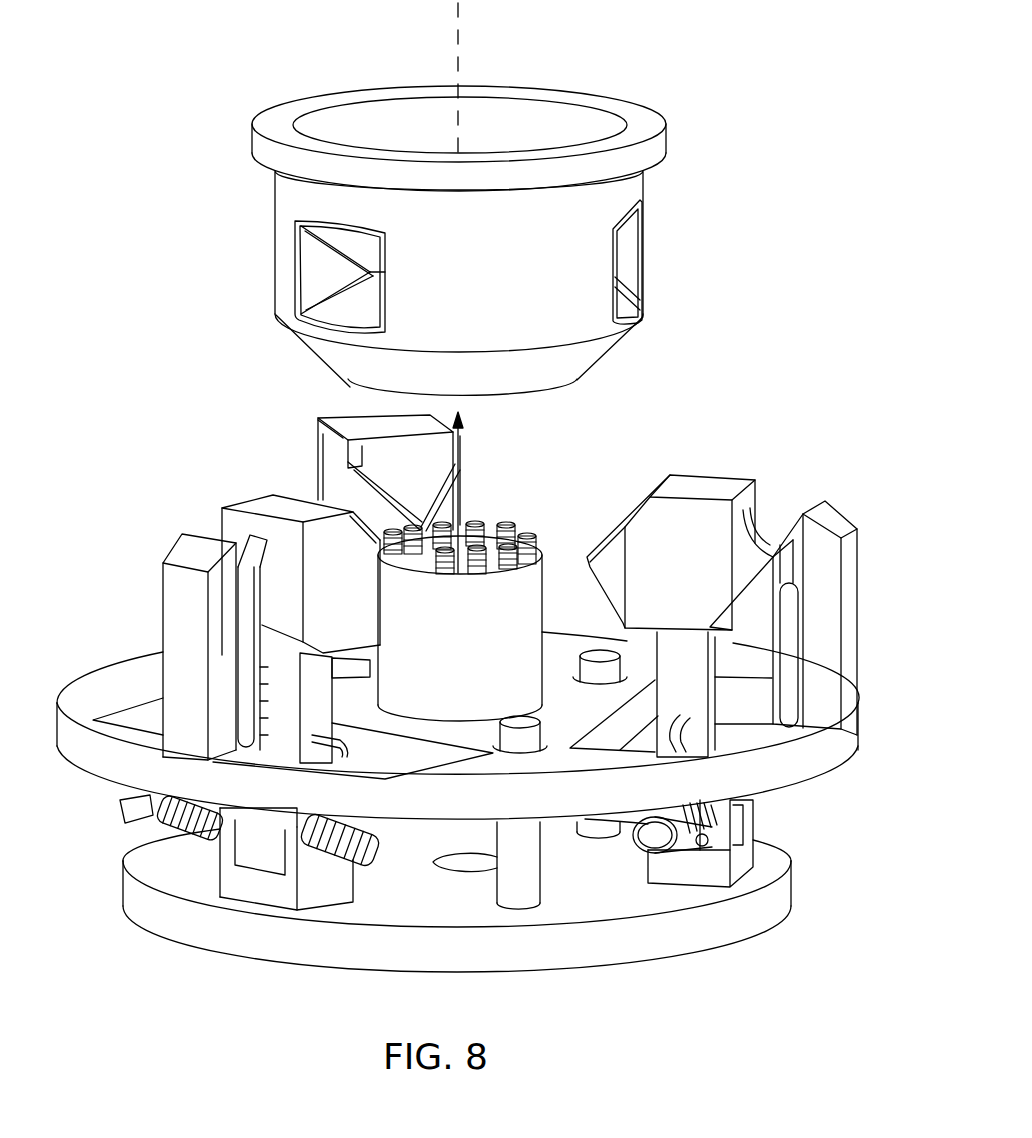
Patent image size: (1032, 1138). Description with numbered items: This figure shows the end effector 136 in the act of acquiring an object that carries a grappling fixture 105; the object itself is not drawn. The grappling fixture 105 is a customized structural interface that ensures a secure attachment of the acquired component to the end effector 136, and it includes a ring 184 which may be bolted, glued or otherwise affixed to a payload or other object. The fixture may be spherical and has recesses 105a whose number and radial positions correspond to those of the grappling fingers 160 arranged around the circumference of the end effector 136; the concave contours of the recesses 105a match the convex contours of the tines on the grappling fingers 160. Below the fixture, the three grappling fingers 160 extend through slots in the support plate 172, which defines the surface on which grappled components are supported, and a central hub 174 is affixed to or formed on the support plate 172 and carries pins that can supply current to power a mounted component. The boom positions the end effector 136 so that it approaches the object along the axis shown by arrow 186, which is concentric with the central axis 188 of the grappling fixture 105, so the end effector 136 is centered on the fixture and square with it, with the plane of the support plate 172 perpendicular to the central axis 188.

The grappling fixture 105 is at (507, 278).
The recesses 105a is at (461, 266).
The end effector 136 is at (843, 515).
The grappling fingers 160 is at (733, 433).
The support plate 172 is at (110, 677).
The central hub 174 is at (545, 528).
The ring 184 is at (636, 114).
The arrow 186 is at (503, 492).
The central axis 188 is at (508, 81).